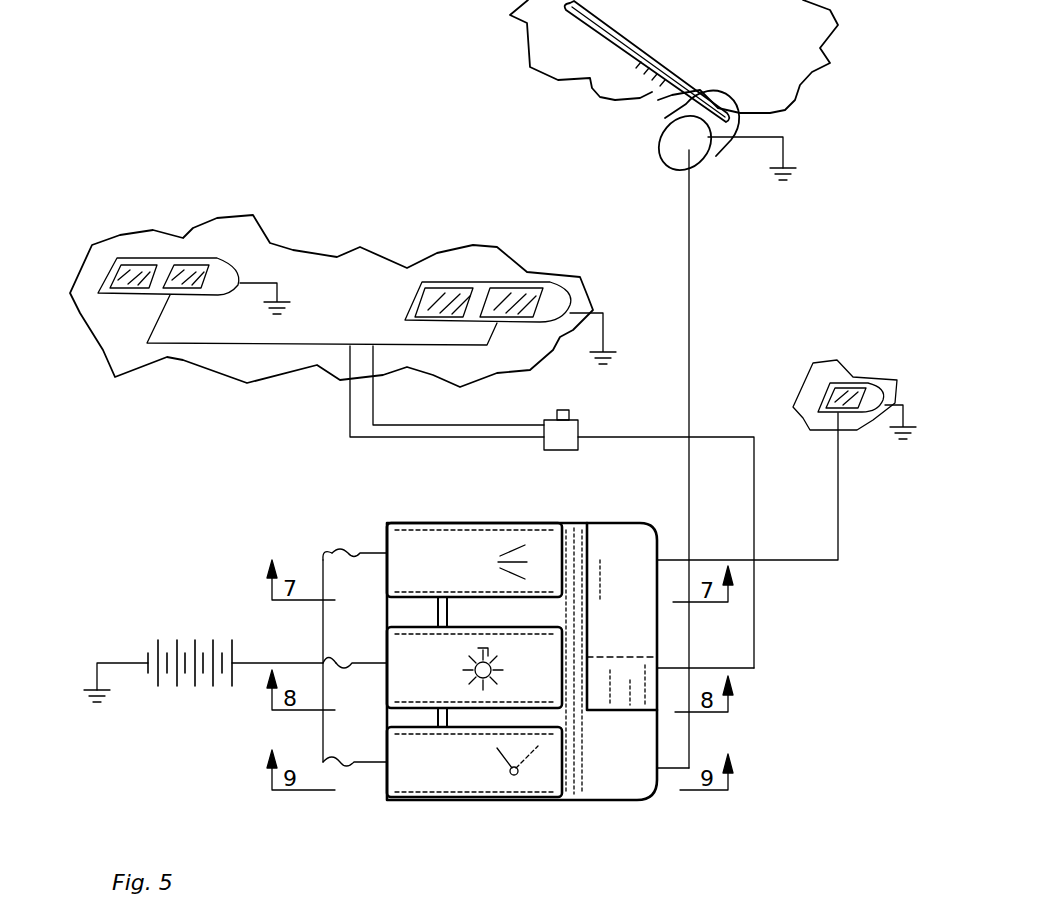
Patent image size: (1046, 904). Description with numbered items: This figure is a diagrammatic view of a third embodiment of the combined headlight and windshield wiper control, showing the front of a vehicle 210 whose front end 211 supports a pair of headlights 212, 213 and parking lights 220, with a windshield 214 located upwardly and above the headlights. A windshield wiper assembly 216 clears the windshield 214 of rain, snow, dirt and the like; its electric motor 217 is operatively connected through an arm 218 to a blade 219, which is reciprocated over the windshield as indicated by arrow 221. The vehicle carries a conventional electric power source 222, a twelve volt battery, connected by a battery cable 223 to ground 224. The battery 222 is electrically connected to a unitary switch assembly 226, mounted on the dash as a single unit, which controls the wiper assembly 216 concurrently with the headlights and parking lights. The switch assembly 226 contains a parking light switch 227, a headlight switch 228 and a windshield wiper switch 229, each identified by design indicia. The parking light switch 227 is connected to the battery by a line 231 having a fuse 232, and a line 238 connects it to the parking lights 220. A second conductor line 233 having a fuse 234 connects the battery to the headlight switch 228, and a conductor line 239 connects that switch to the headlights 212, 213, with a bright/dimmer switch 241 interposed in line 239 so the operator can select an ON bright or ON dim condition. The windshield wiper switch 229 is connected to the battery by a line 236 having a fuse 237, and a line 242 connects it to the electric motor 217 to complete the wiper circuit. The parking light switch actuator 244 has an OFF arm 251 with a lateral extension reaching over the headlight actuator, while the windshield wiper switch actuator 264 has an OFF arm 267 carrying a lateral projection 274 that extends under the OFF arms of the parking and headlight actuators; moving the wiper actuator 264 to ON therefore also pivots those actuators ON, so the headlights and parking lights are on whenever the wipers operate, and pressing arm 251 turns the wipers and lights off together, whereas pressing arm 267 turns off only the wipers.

The vehicle 210 is at (297, 250).
The front end 211 is at (165, 360).
The headlight 212 is at (138, 268).
The headlight 213 is at (452, 290).
The windshield 214 is at (643, 110).
The windshield wiper assembly 216 is at (745, 97).
The electric motor 217 is at (688, 165).
The arm 218 is at (748, 34).
The blade 219 is at (616, 98).
The parking lights 220 is at (805, 378).
The arrow 221 is at (596, 58).
The electric power source 222 is at (208, 640).
The battery cable 223 is at (120, 660).
The ground 224 is at (88, 700).
The switch assembly 226 is at (357, 523).
The parking light switch 227 is at (528, 722).
The headlight switch 228 is at (474, 763).
The windshield wiper switch 229 is at (474, 813).
The line 231 is at (323, 558).
The fuse 232 is at (340, 550).
The second conductor line 233 is at (330, 660).
The fuse 234 is at (345, 672).
The line 236 is at (320, 728).
The fuse 237 is at (332, 760).
The line 238 is at (805, 562).
The conductor line 239 is at (754, 638).
The bright/dimmer switch 241 is at (565, 450).
The line 242 is at (689, 412).
The parking light switch actuator 244 is at (396, 526).
The OFF arm 251 is at (607, 526).
The windshield wiper switch actuator 264 is at (470, 800).
The OFF arm 267 is at (612, 800).
The lateral projection 274 is at (612, 724).